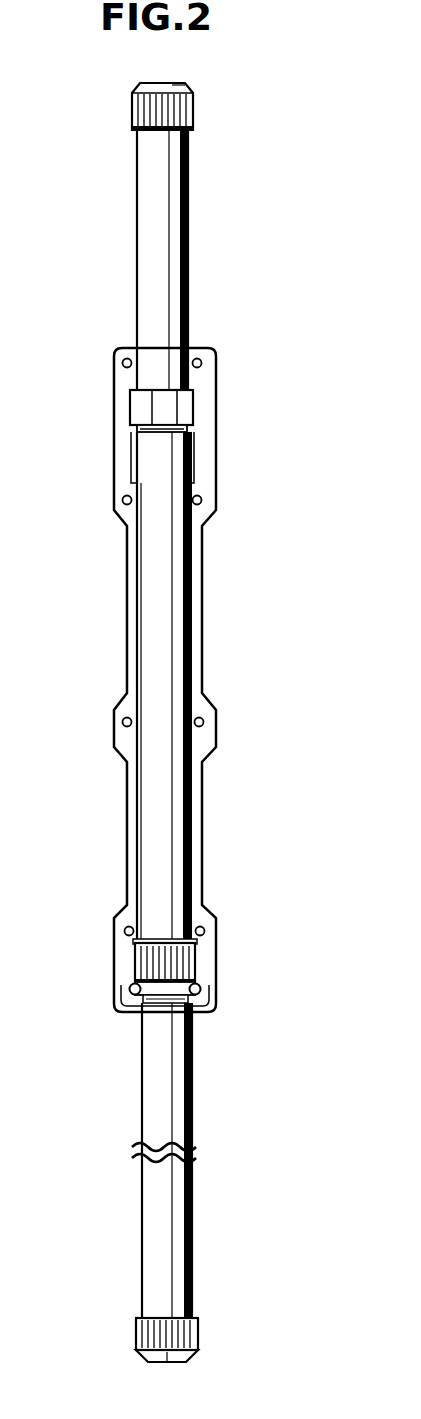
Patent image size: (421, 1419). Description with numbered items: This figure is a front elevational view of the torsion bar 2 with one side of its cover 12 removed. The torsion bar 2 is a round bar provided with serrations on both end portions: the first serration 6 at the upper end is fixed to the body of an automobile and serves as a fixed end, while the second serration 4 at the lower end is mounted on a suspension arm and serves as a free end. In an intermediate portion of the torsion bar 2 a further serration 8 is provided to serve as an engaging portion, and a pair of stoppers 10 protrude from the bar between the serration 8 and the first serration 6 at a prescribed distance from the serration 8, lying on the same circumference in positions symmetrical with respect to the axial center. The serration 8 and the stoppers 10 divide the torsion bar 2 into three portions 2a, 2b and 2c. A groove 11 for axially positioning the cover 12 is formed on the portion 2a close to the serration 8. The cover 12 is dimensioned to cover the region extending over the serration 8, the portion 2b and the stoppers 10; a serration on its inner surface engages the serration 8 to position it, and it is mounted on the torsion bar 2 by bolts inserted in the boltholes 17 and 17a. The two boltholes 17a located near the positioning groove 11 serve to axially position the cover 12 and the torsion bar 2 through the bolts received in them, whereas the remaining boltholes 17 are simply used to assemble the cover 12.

The torsion bar 2 is at (213, 724).
The portion of the torsion bar 2a is at (195, 1212).
The portion of the torsion bar 2b is at (192, 643).
The portion of the torsion bar 2c is at (190, 220).
The second serration 4 is at (199, 1338).
The first serration 6 is at (194, 118).
The serration 8 is at (187, 967).
The stoppers 10 is at (130, 411).
The groove 11 is at (165, 1001).
The cover 12 is at (203, 585).
The boltholes 17 is at (204, 722).
The boltholes 17a is at (133, 995).